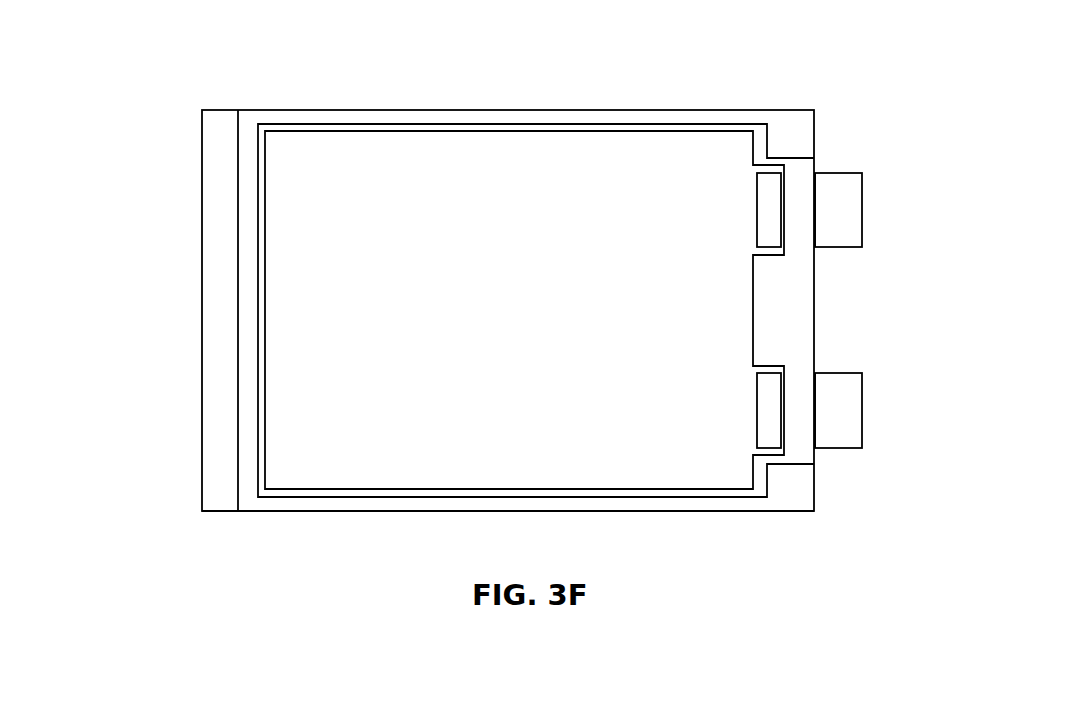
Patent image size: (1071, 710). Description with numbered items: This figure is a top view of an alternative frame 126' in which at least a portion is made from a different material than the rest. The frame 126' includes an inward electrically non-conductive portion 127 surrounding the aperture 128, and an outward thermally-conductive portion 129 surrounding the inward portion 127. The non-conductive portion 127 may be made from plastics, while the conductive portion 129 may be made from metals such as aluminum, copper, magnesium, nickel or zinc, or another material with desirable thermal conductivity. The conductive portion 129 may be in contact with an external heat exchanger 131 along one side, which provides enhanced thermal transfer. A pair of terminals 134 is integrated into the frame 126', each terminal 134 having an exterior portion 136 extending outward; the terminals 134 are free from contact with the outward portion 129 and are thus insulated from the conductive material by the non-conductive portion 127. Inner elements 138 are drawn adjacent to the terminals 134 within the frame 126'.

The frame 126' is at (441, 284).
The inward electrically non-conductive portion 127 is at (674, 115).
The aperture 128 is at (486, 182).
The outward thermally-conductive portion 129 is at (669, 507).
The external heat exchanger 131 is at (215, 470).
The terminals 134 is at (850, 192).
The exterior portion 136 is at (850, 210).
The connector 138 is at (768, 210).